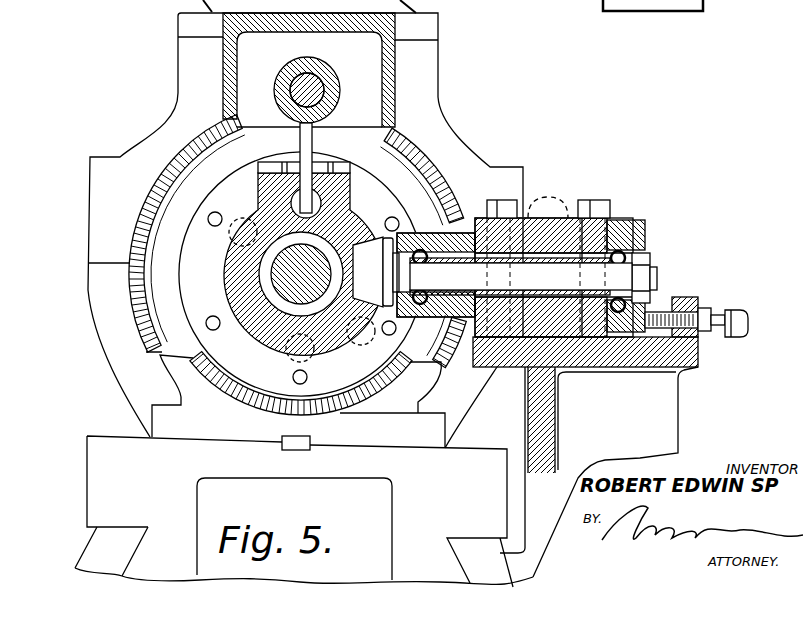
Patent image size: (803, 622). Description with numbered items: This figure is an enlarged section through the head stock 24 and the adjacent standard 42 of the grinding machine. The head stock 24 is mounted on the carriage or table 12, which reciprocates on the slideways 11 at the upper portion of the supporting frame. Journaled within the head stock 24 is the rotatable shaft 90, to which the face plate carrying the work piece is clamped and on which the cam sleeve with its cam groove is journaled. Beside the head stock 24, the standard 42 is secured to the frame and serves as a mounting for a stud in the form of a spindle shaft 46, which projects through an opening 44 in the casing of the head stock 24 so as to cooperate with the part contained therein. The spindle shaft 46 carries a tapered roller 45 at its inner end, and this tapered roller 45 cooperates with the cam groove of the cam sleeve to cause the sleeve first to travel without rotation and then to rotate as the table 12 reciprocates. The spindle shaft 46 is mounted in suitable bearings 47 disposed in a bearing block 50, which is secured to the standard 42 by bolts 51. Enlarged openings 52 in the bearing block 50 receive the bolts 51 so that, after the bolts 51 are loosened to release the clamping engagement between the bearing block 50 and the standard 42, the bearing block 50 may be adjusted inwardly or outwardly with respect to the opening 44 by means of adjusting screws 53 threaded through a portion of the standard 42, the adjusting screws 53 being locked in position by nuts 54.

The slideways 11 is at (133, 530).
The carriage or table 12 is at (105, 467).
The head stock 24 is at (440, 63).
The standard 42 is at (668, 420).
The opening 44 is at (452, 372).
The tapered roller 45 is at (377, 290).
The spindle shaft 46 is at (522, 278).
The bearings 47 is at (425, 233).
The bearing block 50 is at (630, 217).
The bolts 51 is at (500, 203).
The enlarged openings 52 is at (548, 202).
The adjusting screws 53 is at (750, 318).
The nuts 54 is at (703, 312).
The shaft 90 is at (280, 268).